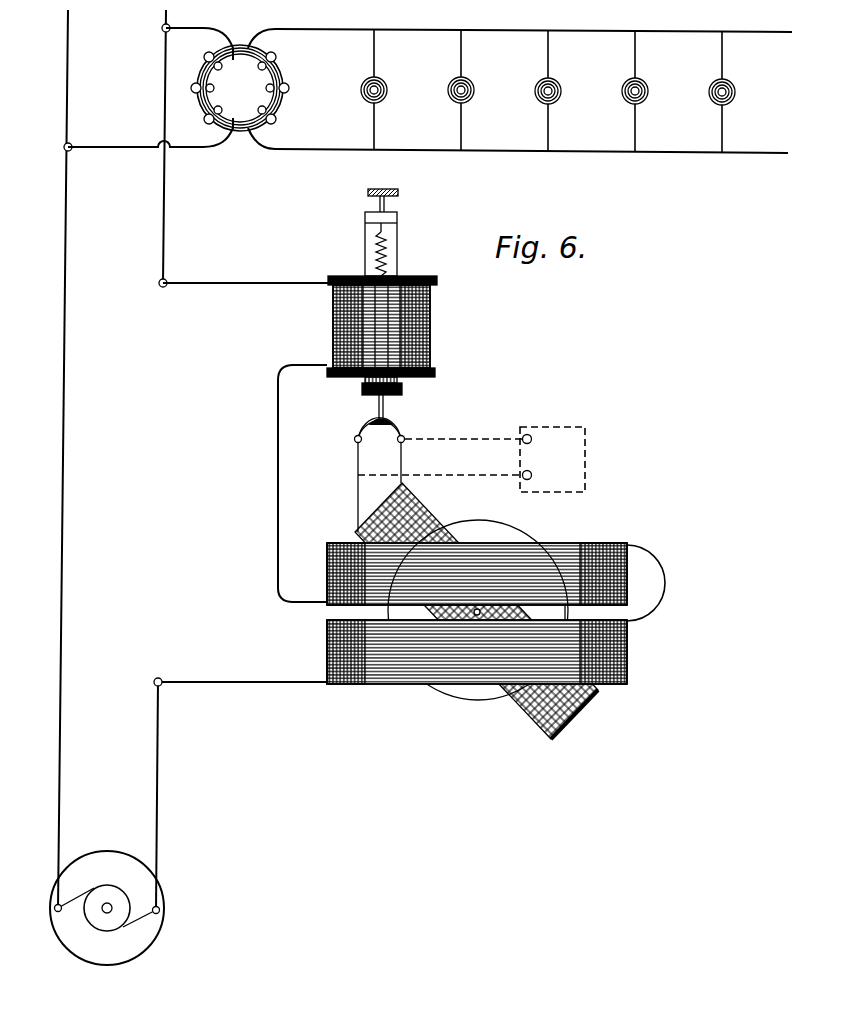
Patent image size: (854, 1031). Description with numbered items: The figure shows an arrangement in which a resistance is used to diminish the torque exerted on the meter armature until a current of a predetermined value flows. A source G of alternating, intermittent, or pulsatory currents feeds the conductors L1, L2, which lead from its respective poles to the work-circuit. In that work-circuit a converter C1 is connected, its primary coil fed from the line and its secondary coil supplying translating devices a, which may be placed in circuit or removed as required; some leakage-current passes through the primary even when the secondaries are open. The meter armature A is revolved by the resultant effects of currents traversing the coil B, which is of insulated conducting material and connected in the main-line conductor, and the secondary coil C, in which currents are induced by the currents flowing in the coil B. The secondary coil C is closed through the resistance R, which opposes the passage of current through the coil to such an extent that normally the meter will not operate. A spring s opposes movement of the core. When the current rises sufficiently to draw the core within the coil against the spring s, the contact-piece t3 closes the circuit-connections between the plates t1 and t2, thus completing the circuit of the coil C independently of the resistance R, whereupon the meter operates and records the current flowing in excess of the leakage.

The converter C1 is at (240, 88).
The translating devices a is at (555, 90).
The spring s is at (386, 250).
The plate t1 is at (351, 475).
The plate t2 is at (408, 449).
The contact-piece t3 is at (381, 431).
The resistance R is at (471, 459).
The secondary coil C is at (428, 500).
The armature A is at (500, 527).
The coil B is at (627, 645).
The main-line conductor L1 is at (240, 794).
The conductor L2 is at (69, 459).
The source of electric currents G is at (116, 908).